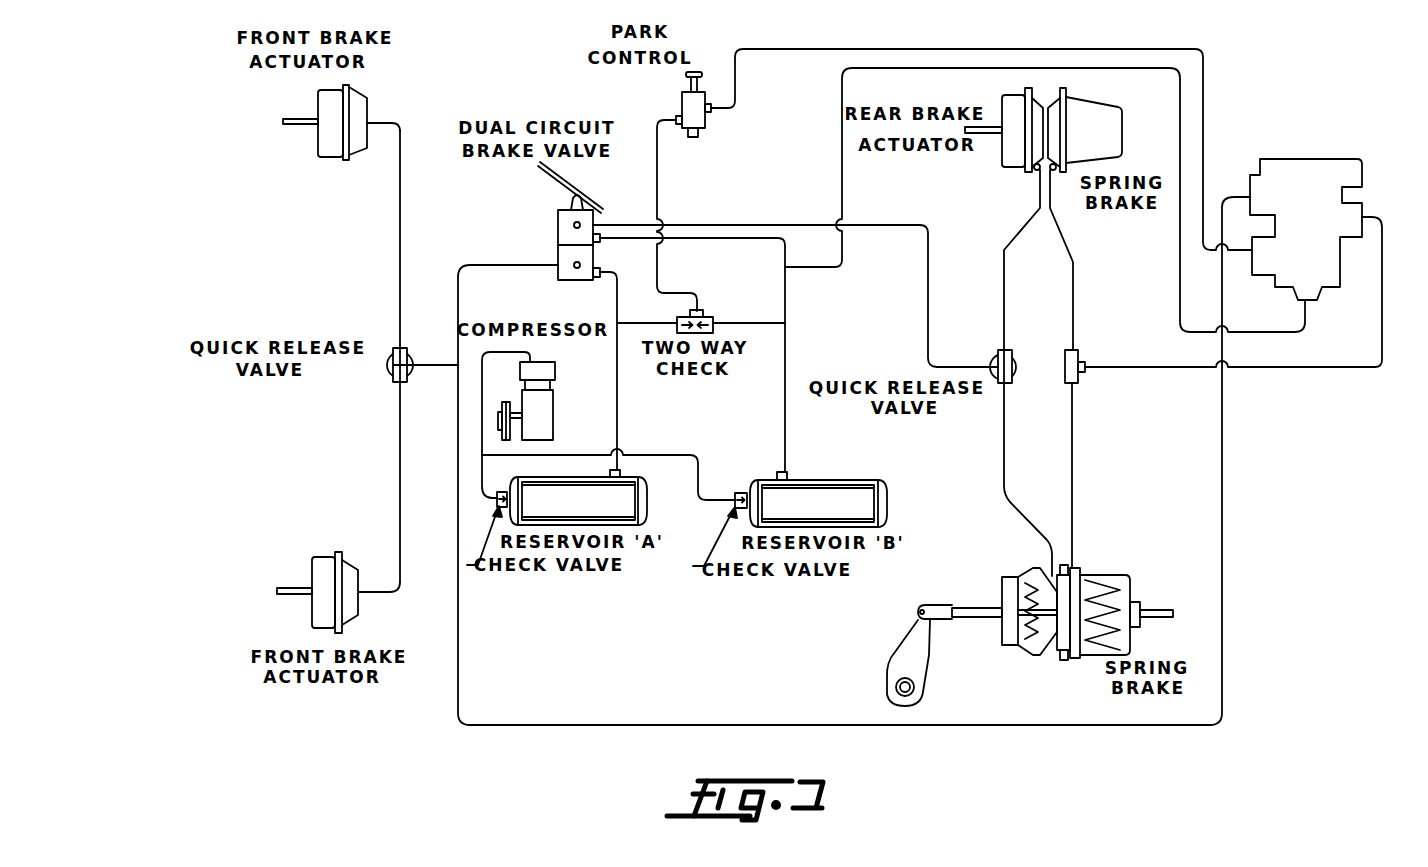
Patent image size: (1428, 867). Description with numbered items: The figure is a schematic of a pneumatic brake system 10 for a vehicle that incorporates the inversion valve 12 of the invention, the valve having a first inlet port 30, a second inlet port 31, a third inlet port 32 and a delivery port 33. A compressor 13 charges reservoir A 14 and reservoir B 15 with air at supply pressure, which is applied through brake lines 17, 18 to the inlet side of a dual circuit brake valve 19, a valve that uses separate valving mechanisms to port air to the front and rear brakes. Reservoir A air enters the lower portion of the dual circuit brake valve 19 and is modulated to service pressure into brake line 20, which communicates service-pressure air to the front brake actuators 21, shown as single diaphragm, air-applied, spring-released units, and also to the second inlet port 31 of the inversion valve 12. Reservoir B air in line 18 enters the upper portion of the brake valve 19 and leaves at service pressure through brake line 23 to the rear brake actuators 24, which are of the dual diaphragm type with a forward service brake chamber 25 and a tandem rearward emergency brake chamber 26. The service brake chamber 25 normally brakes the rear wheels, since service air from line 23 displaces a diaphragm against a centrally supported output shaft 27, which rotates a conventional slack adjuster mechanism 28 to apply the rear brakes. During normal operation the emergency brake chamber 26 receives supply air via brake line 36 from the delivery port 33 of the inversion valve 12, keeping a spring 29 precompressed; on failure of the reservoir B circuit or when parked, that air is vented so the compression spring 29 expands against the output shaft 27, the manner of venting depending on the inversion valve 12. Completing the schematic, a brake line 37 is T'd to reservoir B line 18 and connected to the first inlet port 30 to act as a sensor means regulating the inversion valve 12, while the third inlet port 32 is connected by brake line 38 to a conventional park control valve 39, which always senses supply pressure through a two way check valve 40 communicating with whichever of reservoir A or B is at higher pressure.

The pneumatic brake system 10 is at (530, 737).
The inversion valve 12 is at (1319, 231).
The compressor 13 is at (553, 415).
The reservoir "A" 14 is at (592, 511).
The reservoir "B" 15 is at (834, 509).
The brake line 17 is at (618, 412).
The brake line 18 is at (782, 412).
The dual circuit brake valve 19 is at (598, 205).
The brake line 20 is at (510, 265).
The front brake actuators 21 is at (324, 160).
The brake line 23 is at (717, 225).
The rear brake actuators 24 is at (1124, 108).
The service brake chamber 25 is at (1030, 575).
The emergency brake chamber 26 is at (1098, 572).
The output shaft 27 is at (975, 606).
The slack adjuster mechanism 28 is at (893, 657).
The spring 29 is at (1124, 576).
The first inlet port 30 is at (1310, 302).
The second inlet port 31 is at (1243, 190).
The third inlet port 32 is at (1253, 262).
The delivery port 33 is at (1366, 212).
The brake line 36 is at (1074, 442).
The brake line 37 is at (920, 70).
The brake line 38 is at (1067, 47).
The park control valve 39 is at (700, 132).
The two way check valve 40 is at (712, 311).